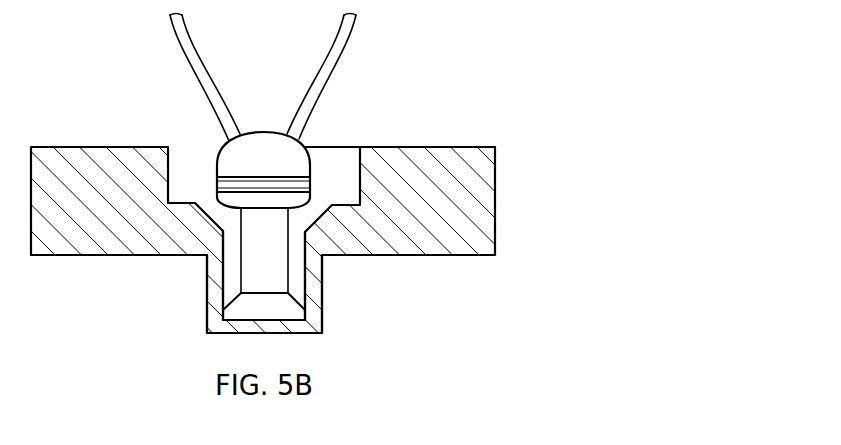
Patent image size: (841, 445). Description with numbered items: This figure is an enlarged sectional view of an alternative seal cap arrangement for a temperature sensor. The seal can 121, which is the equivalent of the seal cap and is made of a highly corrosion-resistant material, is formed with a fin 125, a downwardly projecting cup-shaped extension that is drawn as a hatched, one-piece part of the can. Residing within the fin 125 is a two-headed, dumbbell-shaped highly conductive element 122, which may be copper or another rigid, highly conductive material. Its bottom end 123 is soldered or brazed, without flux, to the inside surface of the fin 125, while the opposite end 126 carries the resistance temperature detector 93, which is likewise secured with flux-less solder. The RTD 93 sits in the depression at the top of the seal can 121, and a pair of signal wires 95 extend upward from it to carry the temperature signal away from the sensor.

The resistance temperature detector 93 is at (263, 130).
The signal wires 95 is at (212, 82).
The seal can 121 is at (468, 256).
The highly conductive element 122 is at (289, 274).
The bottom end 123 is at (297, 303).
The fin 125 is at (207, 306).
The opposite end 126 is at (245, 212).